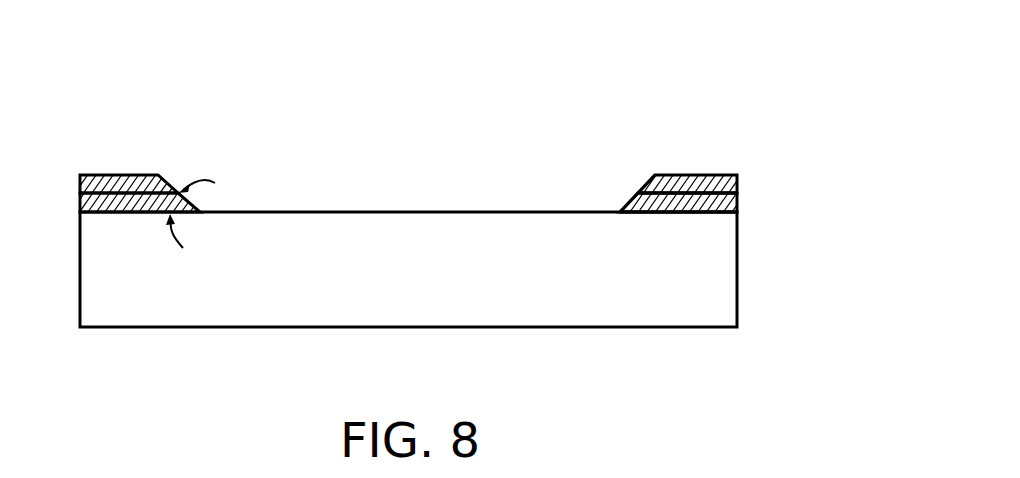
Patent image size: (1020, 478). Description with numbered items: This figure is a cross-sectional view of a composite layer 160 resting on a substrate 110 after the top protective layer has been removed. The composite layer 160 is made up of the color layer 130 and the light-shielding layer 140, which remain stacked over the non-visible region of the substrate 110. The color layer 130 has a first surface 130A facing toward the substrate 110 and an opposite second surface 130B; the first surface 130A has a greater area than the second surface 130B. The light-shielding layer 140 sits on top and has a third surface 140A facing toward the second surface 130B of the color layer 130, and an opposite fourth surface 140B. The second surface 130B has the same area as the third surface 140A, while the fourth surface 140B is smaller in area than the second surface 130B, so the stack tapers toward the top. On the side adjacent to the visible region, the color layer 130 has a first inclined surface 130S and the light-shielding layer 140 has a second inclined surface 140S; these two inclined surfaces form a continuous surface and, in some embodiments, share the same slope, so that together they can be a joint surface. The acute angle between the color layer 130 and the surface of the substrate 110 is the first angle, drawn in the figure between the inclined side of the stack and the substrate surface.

The substrate 110 is at (725, 307).
The color layer 130 is at (95, 200).
The light-shielding layer 140 is at (137, 185).
The composite layer 160 is at (138, 300).
The first surface 130A is at (671, 222).
The second surface 130B is at (698, 204).
The first inclined surface 130S is at (622, 200).
The third surface 140A is at (667, 184).
The fourth surface 140B is at (713, 169).
The second inclined surface 140S is at (642, 180).